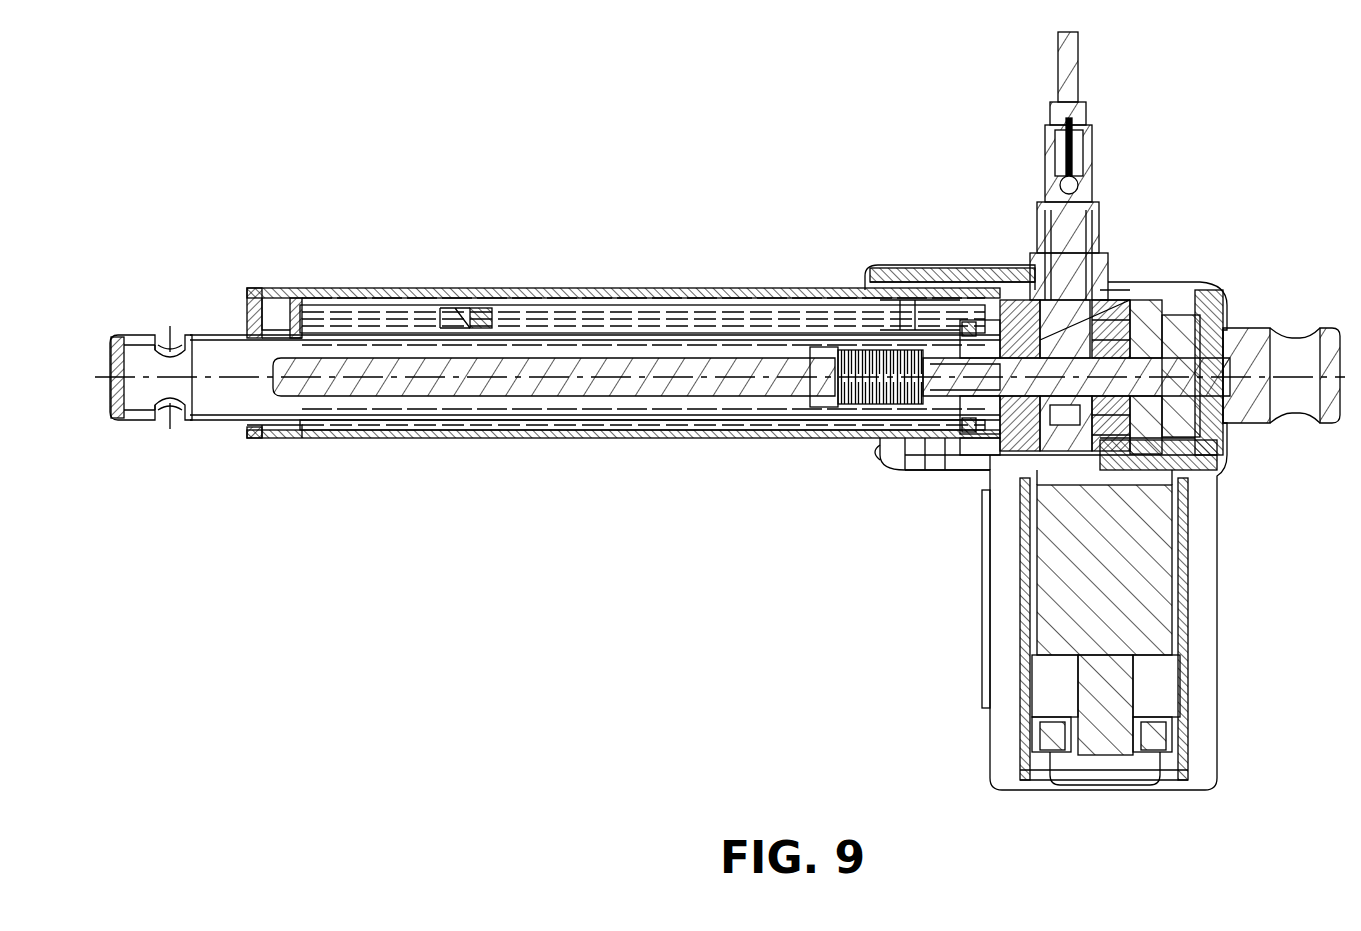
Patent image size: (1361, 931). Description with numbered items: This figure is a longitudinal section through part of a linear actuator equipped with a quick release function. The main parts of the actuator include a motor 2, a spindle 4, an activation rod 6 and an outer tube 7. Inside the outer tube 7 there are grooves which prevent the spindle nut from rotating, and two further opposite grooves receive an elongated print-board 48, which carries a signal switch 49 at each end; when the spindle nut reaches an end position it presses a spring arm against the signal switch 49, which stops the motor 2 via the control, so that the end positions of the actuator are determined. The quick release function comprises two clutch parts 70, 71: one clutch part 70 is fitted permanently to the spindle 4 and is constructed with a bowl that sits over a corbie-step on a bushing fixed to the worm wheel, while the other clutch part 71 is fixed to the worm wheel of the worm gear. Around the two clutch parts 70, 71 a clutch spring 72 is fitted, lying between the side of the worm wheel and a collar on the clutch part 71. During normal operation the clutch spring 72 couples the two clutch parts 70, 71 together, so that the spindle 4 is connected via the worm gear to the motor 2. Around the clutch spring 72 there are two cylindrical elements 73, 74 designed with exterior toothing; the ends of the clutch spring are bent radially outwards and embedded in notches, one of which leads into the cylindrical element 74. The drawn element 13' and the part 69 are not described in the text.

The motor 2 is at (1062, 636).
The spindle 4 is at (525, 388).
The activation rod 6 is at (222, 335).
The outer tube 7 is at (573, 290).
The coupling member 13' is at (1144, 295).
The print-board 48 is at (676, 320).
The signal switch 49 is at (480, 318).
The motor mounting plate 69 is at (982, 690).
The clutch part 70 is at (950, 441).
The clutch part 71 is at (1020, 430).
The clutch spring 72 is at (1053, 333).
The cylindrical element 73 is at (1030, 432).
The cylindrical element 74 is at (1055, 430).